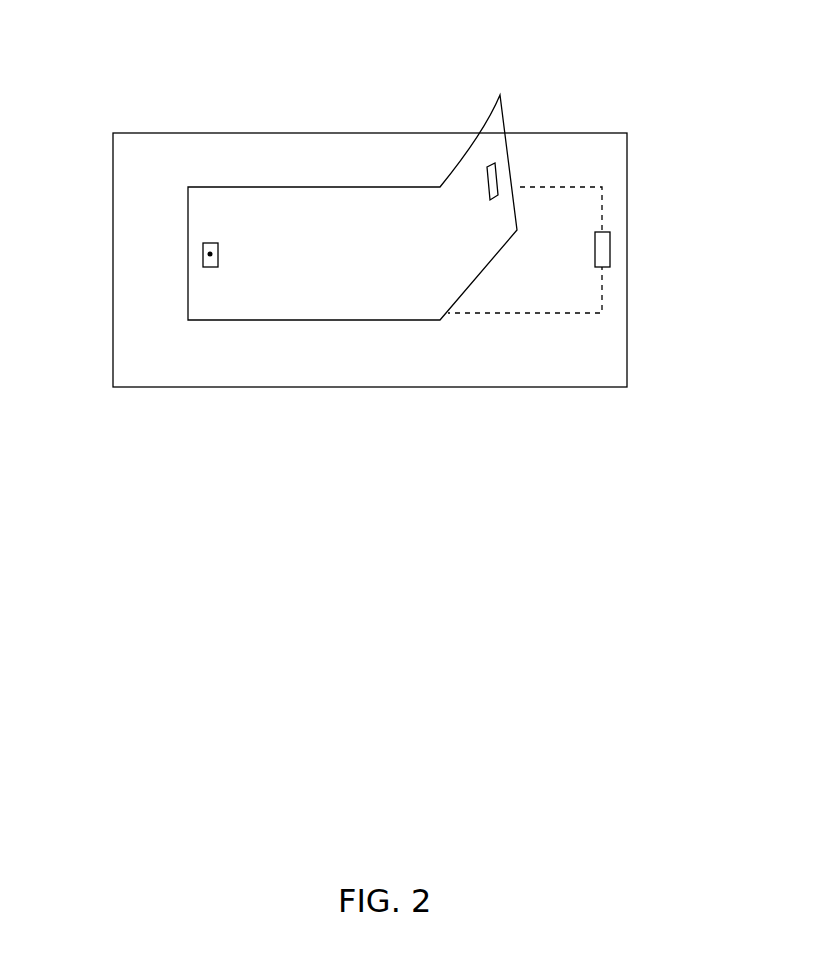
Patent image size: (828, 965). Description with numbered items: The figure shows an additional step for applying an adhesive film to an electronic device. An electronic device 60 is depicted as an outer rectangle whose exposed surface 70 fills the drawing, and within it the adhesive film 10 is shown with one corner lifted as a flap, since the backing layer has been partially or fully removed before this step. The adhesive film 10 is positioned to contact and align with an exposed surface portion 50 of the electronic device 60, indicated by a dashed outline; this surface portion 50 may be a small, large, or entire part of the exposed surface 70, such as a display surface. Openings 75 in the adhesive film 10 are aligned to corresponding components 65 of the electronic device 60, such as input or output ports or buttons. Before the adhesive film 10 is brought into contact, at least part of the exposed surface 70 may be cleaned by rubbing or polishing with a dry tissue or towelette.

The adhesive film 10 is at (298, 187).
The exposed surface portion 50 is at (582, 187).
The electronic device 60 is at (487, 362).
The components 65 is at (610, 232).
The exposed surface 70 is at (608, 360).
The openings 75 is at (490, 165).